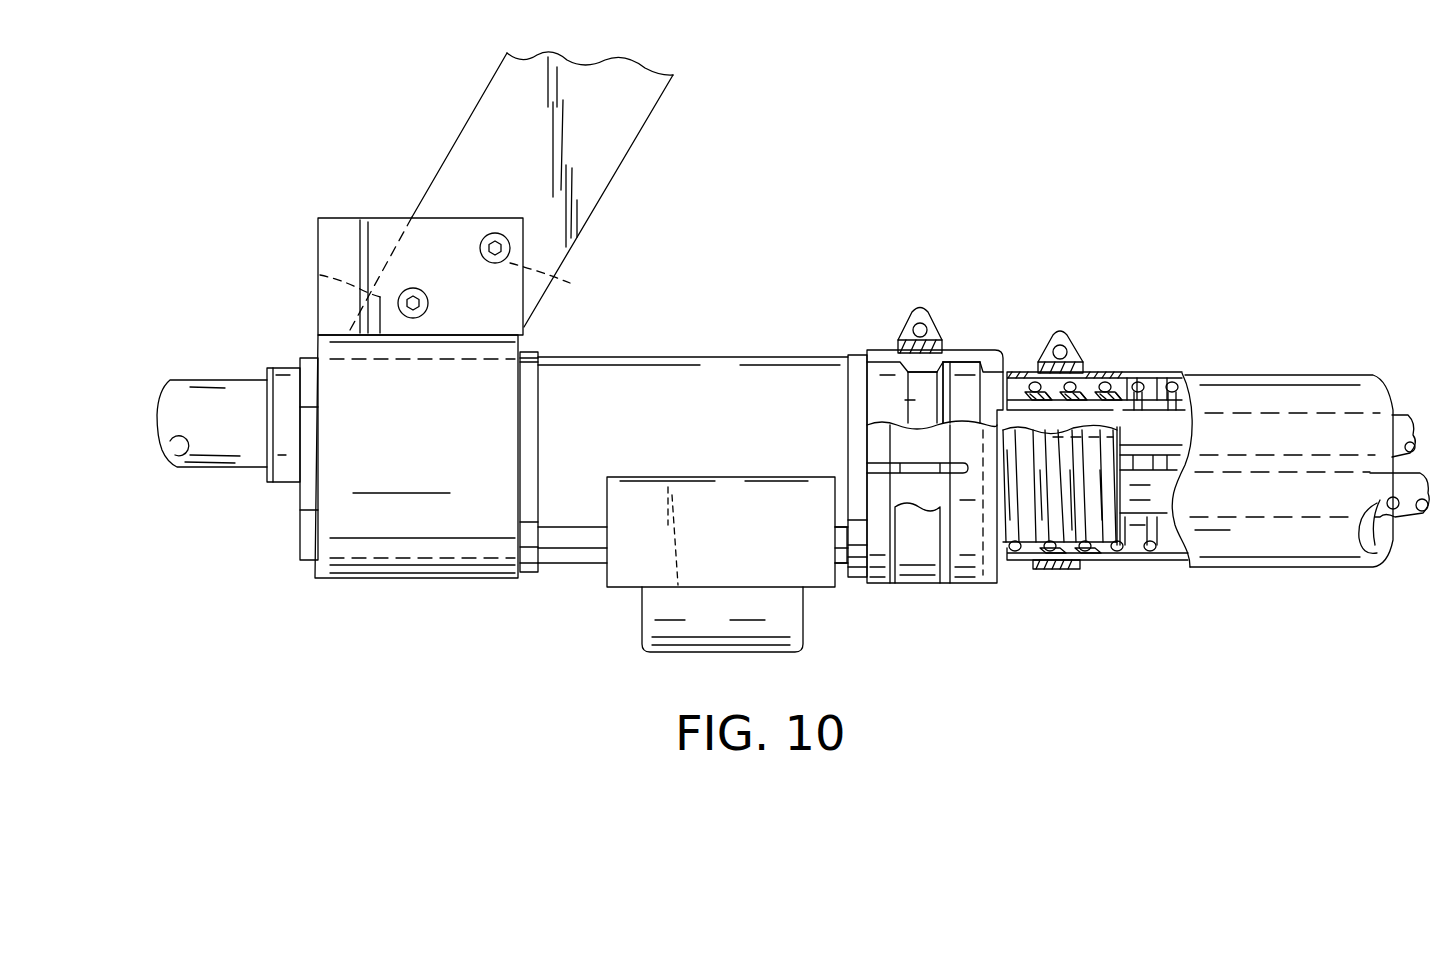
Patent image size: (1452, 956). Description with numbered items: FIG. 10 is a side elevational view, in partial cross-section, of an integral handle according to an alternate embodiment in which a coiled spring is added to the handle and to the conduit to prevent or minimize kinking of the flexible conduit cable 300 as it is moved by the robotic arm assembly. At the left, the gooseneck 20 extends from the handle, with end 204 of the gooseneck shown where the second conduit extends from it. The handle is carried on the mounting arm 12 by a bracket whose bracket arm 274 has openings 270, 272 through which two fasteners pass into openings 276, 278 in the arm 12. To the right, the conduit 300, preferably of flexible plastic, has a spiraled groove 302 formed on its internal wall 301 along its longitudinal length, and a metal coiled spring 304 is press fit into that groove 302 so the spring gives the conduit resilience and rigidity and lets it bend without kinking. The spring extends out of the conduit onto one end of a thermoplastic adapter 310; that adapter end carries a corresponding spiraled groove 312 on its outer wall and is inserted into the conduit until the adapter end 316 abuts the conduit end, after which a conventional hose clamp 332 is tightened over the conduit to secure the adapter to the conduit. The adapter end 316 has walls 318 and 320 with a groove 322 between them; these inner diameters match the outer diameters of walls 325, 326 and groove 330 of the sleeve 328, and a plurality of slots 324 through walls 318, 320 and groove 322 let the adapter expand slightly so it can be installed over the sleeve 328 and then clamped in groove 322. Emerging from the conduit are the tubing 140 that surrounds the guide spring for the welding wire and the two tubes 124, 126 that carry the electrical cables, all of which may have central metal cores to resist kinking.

The mounting arm 12 is at (477, 115).
The gooseneck 20 is at (195, 462).
The end of the gooseneck 204 is at (263, 475).
The opening in bracket arm 270 is at (413, 288).
The opening in bracket arm 272 is at (493, 263).
The bracket arm 274 is at (328, 304).
The opening in arm 276 is at (318, 275).
The opening in arm 278 is at (560, 281).
The flexible conduit cable 300 is at (1210, 400).
The internal wall of the conduit 301 is at (1178, 383).
The spiraled groove 302 is at (1168, 568).
The coiled spring 304 is at (1137, 560).
The adapter 310 is at (922, 305).
The spiraled groove on adapter end 312 is at (1040, 572).
The adapter end 316 is at (963, 363).
The wall of adapter end 318 is at (880, 375).
The wall of adapter end 320 is at (957, 380).
The groove of adapter 322 is at (937, 367).
The slots 324 is at (917, 470).
The wall of sleeve 325 is at (858, 350).
The wall of sleeve 326 is at (960, 368).
The sleeve 328 is at (563, 552).
The groove of sleeve 330 is at (915, 407).
The hose clamp 332 is at (1066, 340).
The tubing 140 is at (1400, 415).
The tube 124 is at (1377, 500).
The tube 126 is at (1414, 520).